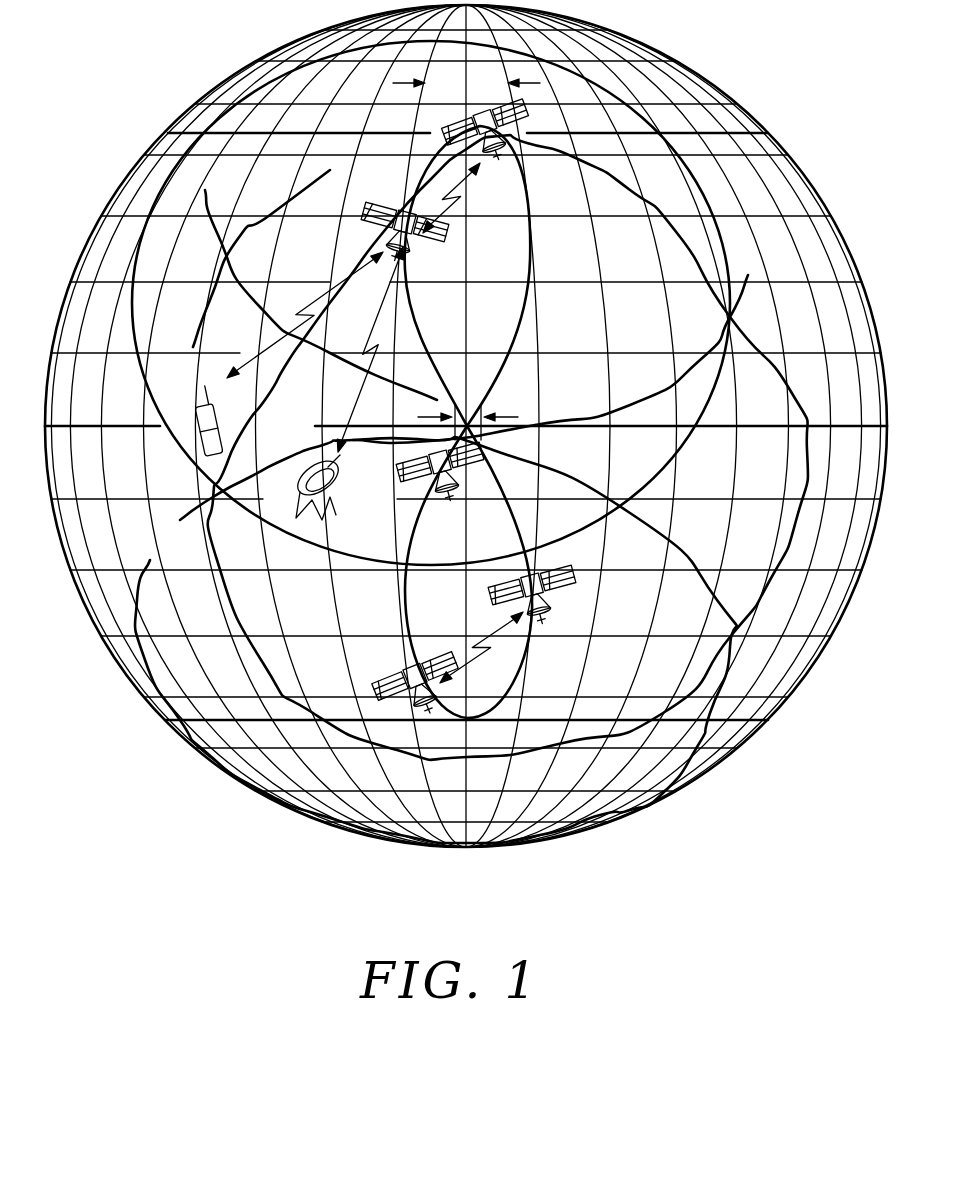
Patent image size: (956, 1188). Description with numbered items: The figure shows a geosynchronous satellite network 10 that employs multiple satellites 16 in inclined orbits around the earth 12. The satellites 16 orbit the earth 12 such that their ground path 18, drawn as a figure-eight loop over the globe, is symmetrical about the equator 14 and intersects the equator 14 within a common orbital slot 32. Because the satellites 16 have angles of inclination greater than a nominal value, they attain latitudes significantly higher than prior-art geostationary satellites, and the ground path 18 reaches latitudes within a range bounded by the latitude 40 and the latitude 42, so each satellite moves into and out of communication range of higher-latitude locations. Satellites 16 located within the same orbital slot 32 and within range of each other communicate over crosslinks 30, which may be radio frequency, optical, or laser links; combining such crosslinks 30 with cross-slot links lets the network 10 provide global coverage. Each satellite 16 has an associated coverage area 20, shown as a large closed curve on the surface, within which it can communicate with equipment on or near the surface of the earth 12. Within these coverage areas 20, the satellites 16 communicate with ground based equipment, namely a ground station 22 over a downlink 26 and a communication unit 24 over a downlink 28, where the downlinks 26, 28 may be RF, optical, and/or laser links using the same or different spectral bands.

The geosynchronous satellite network 10 is at (318, 957).
The earth 12 is at (720, 766).
The equator 14 is at (631, 430).
The satellites 16 is at (398, 207).
The ground path 18 is at (527, 320).
The coverage area 20 is at (740, 264).
The ground station 22 is at (302, 518).
The communication unit 24 is at (196, 404).
The downlink 26 is at (354, 394).
The downlink 28 is at (368, 264).
The crosslink 30 is at (458, 190).
The orbital slot 32 is at (393, 84).
The latitude 40 is at (770, 721).
The latitude 42 is at (772, 132).